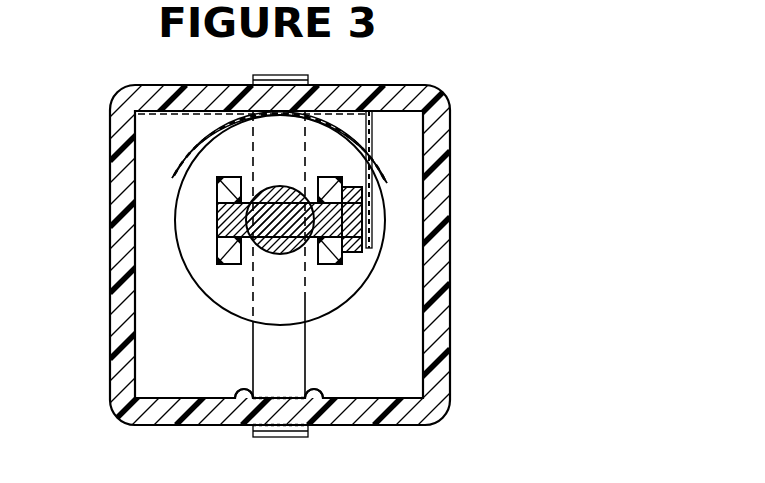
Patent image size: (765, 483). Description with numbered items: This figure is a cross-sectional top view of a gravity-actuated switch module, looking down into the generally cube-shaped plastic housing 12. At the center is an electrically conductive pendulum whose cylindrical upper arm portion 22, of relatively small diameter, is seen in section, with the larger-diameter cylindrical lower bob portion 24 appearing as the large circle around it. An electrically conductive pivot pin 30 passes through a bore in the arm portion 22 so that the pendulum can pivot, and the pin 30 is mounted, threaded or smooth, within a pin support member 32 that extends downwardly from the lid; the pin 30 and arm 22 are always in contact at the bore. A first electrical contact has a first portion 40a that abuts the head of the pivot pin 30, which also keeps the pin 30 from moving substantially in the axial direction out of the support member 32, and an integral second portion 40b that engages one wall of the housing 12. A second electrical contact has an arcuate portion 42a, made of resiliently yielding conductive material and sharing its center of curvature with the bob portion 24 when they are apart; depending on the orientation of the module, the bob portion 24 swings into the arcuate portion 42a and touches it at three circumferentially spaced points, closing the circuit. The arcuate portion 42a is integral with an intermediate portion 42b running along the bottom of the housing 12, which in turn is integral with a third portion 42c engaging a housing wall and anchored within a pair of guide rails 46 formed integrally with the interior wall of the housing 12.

The housing 12 is at (110, 218).
The upper arm portion 22 is at (269, 186).
The lower bob portion 24 is at (178, 198).
The pivot pin 30 is at (217, 205).
The pin support member 32 is at (218, 265).
The first portion of the first electrical contact 40a is at (373, 238).
The second portion of the first electrical contact 40b is at (308, 79).
The arcuate portion of the second electrical contact 42a is at (176, 173).
The intermediate portion of the second electrical contact 42b is at (307, 355).
The third portion of the second electrical contact 42c is at (266, 396).
The guide rails 46 is at (316, 389).